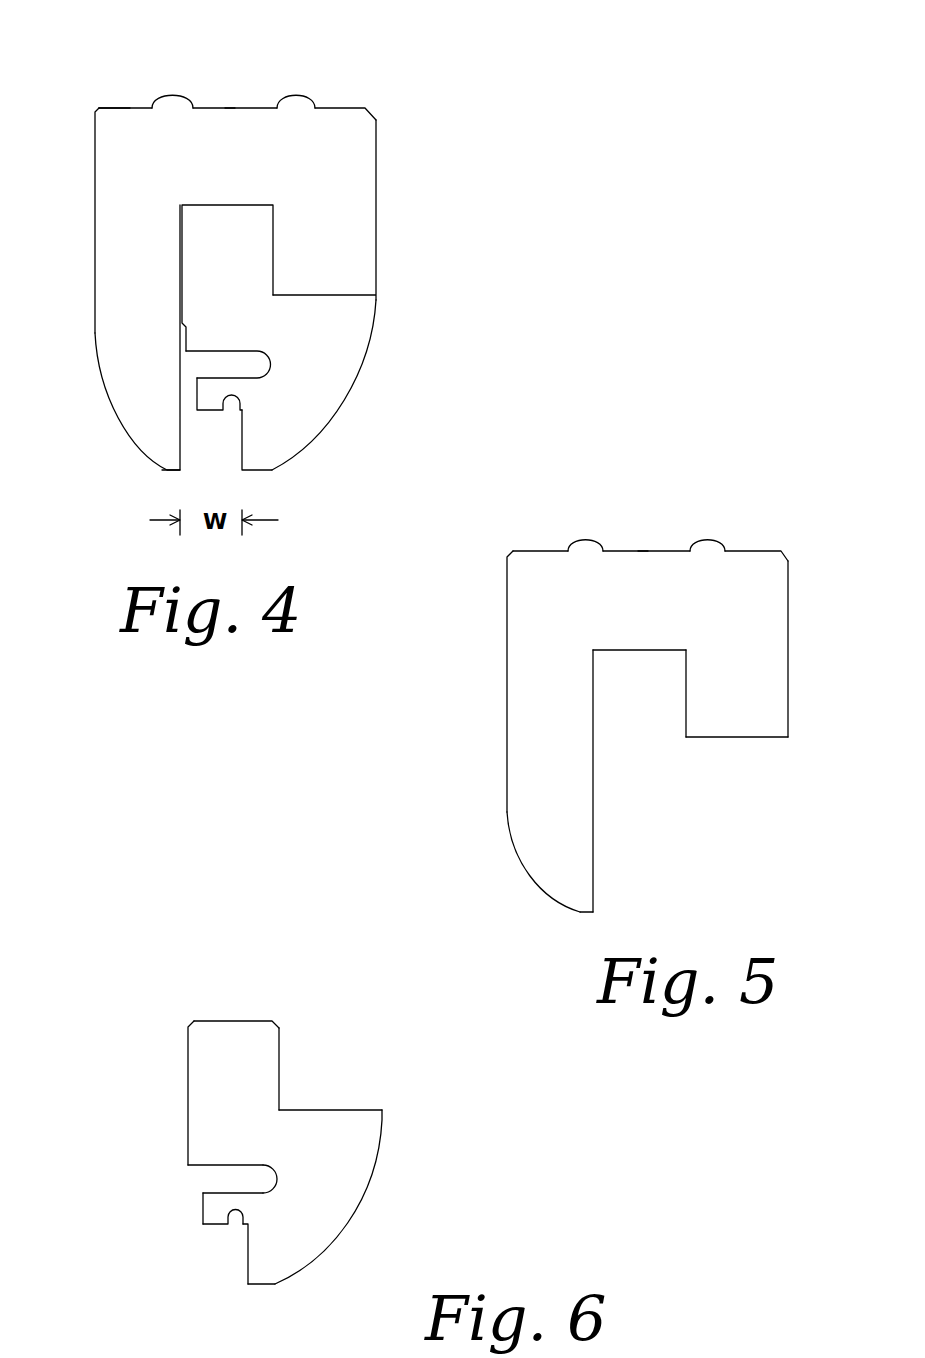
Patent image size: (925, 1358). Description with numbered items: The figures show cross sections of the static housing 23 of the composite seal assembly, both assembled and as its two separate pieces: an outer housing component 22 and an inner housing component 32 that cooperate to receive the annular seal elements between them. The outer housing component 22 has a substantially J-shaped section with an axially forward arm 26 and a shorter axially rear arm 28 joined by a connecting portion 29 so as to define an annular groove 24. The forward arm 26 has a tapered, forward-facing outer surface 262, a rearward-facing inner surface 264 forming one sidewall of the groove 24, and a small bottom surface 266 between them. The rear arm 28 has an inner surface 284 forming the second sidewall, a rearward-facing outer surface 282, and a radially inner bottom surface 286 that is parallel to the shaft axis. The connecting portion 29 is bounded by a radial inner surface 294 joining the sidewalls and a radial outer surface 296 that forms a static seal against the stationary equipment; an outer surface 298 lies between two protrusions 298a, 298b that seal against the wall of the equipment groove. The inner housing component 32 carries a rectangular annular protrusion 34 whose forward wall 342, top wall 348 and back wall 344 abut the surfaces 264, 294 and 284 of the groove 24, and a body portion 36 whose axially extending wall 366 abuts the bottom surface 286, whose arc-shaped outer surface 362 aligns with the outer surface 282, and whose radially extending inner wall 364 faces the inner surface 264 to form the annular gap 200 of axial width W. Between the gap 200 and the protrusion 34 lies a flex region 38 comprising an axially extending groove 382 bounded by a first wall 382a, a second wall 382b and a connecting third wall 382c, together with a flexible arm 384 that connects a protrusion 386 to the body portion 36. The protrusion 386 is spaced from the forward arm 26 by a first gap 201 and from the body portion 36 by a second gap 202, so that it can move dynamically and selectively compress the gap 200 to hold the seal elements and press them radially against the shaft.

In FIG. 4, the outer housing component 22 is at (347, 155).
In FIG. 5, the outer housing component 22 is at (721, 824).
In FIG. 4, the static housing 23 is at (459, 250).
In FIG. 5, the annular groove 24 is at (643, 720).
In FIG. 4, the axially forward arm 26 is at (137, 257).
In FIG. 5, the axially forward arm 26 is at (570, 747).
In FIG. 5, the axially rear arm 28 is at (747, 695).
In FIG. 4, the connecting portion 29 is at (220, 152).
In FIG. 5, the connecting portion 29 is at (659, 612).
In FIG. 4, the inner housing component 32 is at (367, 331).
In FIG. 6, the inner housing component 32 is at (165, 1085).
In FIG. 4, the annular protrusion 34 is at (242, 260).
In FIG. 6, the annular protrusion 34 is at (235, 1057).
In FIG. 4, the body portion 36 is at (327, 380).
In FIG. 6, the body portion 36 is at (347, 1147).
In FIG. 4, the flex region 38 is at (190, 378).
In FIG. 6, the flex region 38 is at (168, 1227).
In FIG. 4, the annular gap 200 is at (208, 448).
In FIG. 4, the first radially extending gap 201 is at (193, 397).
In FIG. 6, the first radially extending gap 201 is at (217, 1217).
In FIG. 4, the second radially extending gap 202 is at (243, 408).
In FIG. 6, the second radially extending gap 202 is at (238, 1218).
In FIG. 4, the outer surface 262 is at (95, 198).
In FIG. 5, the outer surface 262 is at (508, 811).
In FIG. 5, the inner surface 264 is at (593, 848).
In FIG. 4, the bottom surface 266 is at (167, 472).
In FIG. 5, the bottom surface 266 is at (580, 913).
In FIG. 6, the bottom surface 266 is at (337, 1110).
In FIG. 5, the outer surface 282 is at (789, 580).
In FIG. 5, the inner surface 284 is at (686, 699).
In FIG. 5, the bottom surface 286 is at (737, 737).
In FIG. 5, the radial inner surface 294 is at (640, 650).
In FIG. 4, the radial outer surface 296 is at (352, 107).
In FIG. 5, the radial outer surface 296 is at (527, 550).
In FIG. 4, the outer surface 298 is at (230, 108).
In FIG. 5, the outer surface 298 is at (643, 550).
In FIG. 4, the protrusion 298a is at (162, 96).
In FIG. 5, the protrusion 298a is at (573, 538).
In FIG. 4, the protrusion 298b is at (297, 97).
In FIG. 5, the protrusion 298b is at (710, 540).
In FIG. 6, the forward wall 342 is at (188, 1043).
In FIG. 6, the back wall 344 is at (279, 1065).
In FIG. 6, the top wall 348 is at (237, 1021).
In FIG. 6, the outer surface 362 is at (368, 1183).
In FIG. 6, the inner wall 364 is at (248, 1260).
In FIG. 6, the axially extending wall 366 is at (262, 1285).
In FIG. 4, the axially extending groove 382 is at (222, 365).
In FIG. 6, the axially extending groove 382 is at (240, 1175).
In FIG. 6, the first axially extending wall 382a is at (200, 1167).
In FIG. 6, the second axially extending wall 382b is at (213, 1192).
In FIG. 6, the third wall 382c is at (268, 1192).
In FIG. 4, the flexible arm 384 is at (233, 387).
In FIG. 6, the flexible arm 384 is at (240, 1202).
In FIG. 4, the protrusion 386 is at (197, 408).
In FIG. 6, the protrusion 386 is at (202, 1213).